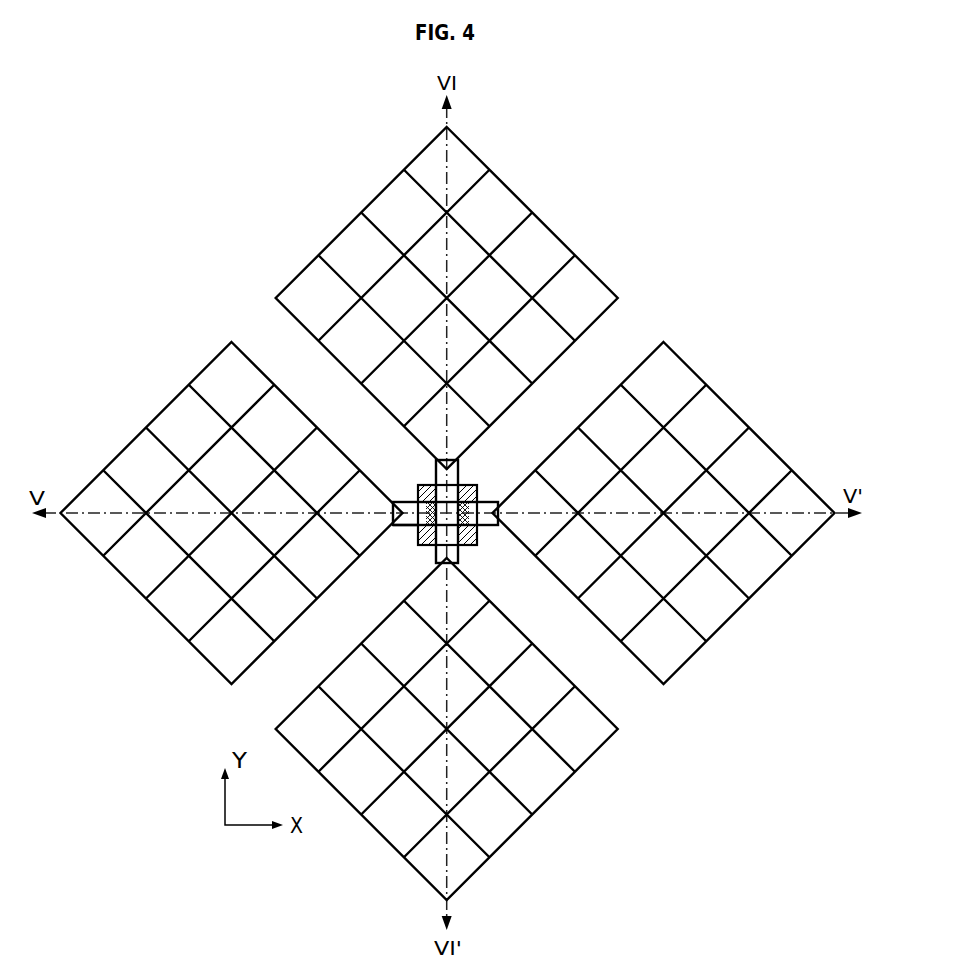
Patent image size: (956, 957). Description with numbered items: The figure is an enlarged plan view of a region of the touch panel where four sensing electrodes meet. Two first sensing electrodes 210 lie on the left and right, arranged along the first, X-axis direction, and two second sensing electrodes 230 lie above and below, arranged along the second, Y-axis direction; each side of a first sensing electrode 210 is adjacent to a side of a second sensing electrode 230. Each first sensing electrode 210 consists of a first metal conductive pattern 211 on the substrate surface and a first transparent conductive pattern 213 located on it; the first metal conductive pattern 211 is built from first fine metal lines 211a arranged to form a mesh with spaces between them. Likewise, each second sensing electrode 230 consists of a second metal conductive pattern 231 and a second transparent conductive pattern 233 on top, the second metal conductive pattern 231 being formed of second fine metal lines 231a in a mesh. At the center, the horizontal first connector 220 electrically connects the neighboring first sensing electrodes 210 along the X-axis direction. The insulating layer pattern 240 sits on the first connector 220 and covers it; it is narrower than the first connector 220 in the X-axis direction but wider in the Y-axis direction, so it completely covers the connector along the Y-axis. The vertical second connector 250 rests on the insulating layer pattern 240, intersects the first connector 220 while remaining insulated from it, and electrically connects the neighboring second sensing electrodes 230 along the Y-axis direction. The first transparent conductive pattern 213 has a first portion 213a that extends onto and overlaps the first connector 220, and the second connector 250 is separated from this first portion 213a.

The first sensing electrode 210 is at (448, 508).
The first metal conductive pattern 211 is at (202, 371).
The first transparent conductive pattern 213 is at (177, 415).
The first fine metal line 211a is at (160, 450).
The first portion 213a is at (405, 527).
The first connector 220 is at (477, 485).
The second sensing electrode 230 is at (447, 516).
The second metal conductive pattern 231 is at (476, 154).
The second transparent conductive pattern 233 is at (497, 198).
The second fine metal line 231a is at (510, 267).
The insulating layer pattern 240 is at (478, 540).
The second connector 250 is at (450, 473).